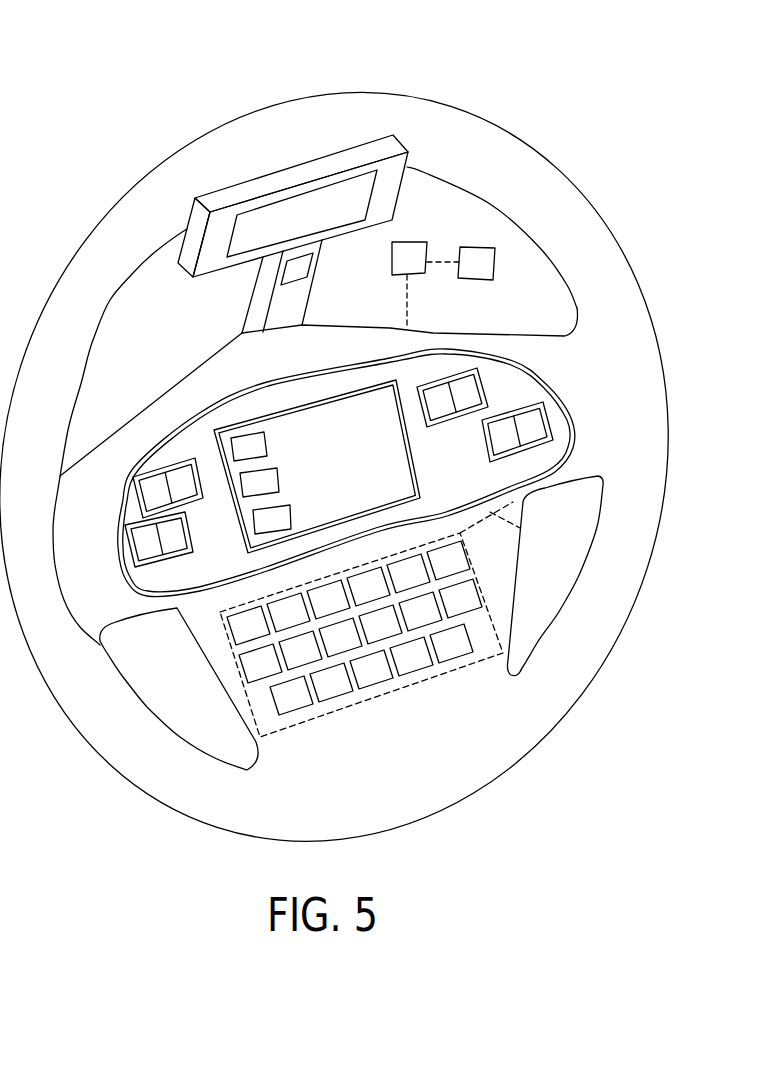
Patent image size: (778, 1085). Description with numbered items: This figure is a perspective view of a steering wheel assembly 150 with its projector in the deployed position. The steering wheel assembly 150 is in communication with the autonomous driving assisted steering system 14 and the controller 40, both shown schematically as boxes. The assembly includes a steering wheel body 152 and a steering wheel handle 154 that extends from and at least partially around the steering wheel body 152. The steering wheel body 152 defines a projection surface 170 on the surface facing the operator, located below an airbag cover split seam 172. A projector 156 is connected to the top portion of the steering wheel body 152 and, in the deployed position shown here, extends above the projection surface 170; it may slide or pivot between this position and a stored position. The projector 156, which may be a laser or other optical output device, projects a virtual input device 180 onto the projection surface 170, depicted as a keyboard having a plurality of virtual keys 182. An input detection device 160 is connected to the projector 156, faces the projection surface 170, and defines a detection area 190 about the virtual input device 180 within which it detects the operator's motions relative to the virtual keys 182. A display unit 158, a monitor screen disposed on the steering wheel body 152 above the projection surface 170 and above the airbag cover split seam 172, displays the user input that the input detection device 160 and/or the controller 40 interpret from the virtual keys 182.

The steering wheel assembly 150 is at (382, 467).
The steering wheel body 152 is at (115, 450).
The steering wheel handle 154 is at (597, 242).
The projector 156 is at (265, 188).
The display unit 158 is at (400, 485).
The input detection device 160 is at (317, 268).
The autonomous driving assisted steering system 14 is at (427, 272).
The controller 40 is at (493, 275).
The projection surface 170 is at (497, 587).
The airbag cover split seam 172 is at (521, 529).
The virtual input device 180 is at (354, 672).
The virtual keys 182 is at (455, 657).
The detection area 190 is at (390, 647).